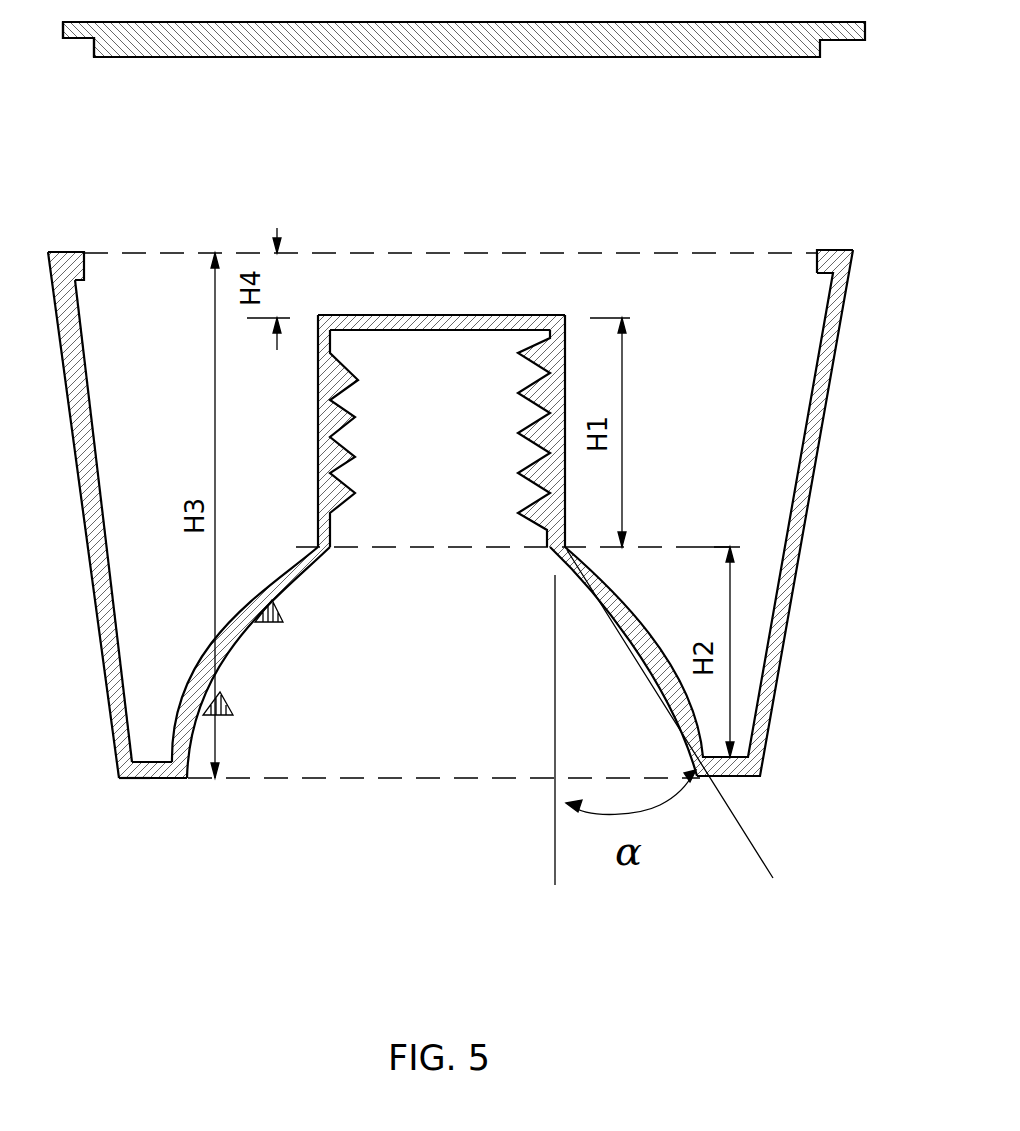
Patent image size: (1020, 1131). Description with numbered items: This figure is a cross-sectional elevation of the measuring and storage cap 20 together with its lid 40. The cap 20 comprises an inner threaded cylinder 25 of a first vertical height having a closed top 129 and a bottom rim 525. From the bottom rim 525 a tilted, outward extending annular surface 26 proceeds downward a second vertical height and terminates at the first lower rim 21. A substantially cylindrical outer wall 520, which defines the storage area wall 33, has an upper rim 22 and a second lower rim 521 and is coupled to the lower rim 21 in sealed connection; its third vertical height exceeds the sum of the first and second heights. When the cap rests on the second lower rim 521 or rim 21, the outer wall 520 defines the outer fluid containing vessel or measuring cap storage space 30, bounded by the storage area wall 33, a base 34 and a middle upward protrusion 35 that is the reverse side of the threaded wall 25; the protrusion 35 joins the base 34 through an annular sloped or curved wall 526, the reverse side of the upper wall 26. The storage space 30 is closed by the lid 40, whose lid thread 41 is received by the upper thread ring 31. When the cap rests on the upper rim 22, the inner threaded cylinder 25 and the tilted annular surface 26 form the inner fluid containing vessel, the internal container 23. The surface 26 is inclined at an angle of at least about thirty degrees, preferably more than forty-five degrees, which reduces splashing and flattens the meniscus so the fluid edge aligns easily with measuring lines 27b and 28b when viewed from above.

The lid 40 is at (465, 64).
The lid thread 41 is at (70, 60).
The upper rim 22 is at (65, 250).
The cap 20 is at (44, 519).
The storage area wall 33 is at (100, 425).
The first lower rim 21 is at (152, 785).
The second lower rim 521 is at (122, 787).
The bottom rim 525 is at (303, 538).
The annular sloped or curved wall 526 is at (257, 597).
The closed top 129 is at (475, 318).
The measuring cap storage space 30 is at (518, 425).
The inner threaded cylinder 25 is at (362, 422).
The internal container 23 is at (513, 661).
The base 34 is at (713, 750).
The upper thread ring 31 is at (793, 280).
The outer wall 520 is at (803, 535).
The upward protrusion 35 is at (418, 268).
The tilted annular surface 26 is at (275, 660).
The measuring line 27b is at (317, 622).
The measuring line 28b is at (260, 703).